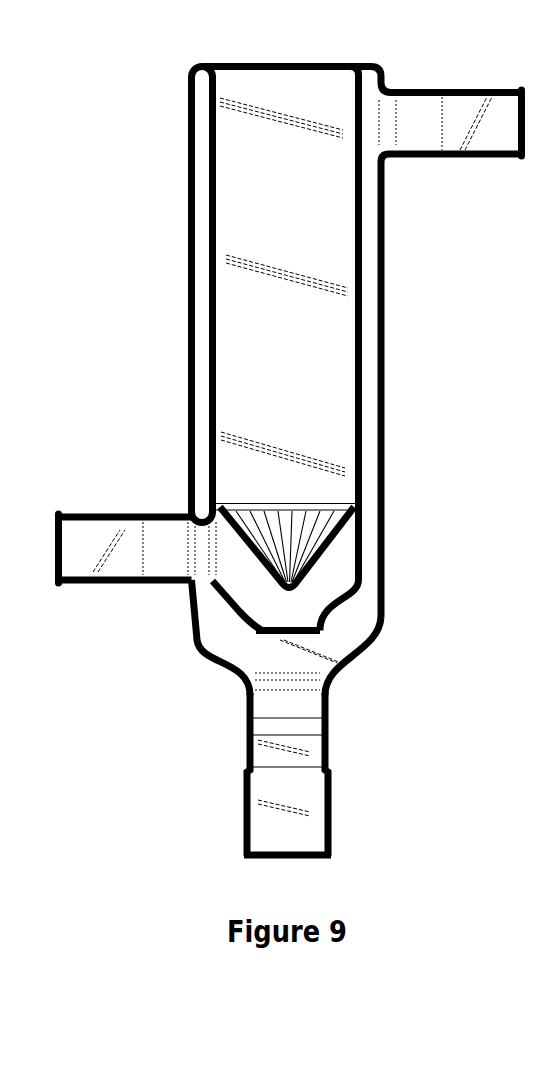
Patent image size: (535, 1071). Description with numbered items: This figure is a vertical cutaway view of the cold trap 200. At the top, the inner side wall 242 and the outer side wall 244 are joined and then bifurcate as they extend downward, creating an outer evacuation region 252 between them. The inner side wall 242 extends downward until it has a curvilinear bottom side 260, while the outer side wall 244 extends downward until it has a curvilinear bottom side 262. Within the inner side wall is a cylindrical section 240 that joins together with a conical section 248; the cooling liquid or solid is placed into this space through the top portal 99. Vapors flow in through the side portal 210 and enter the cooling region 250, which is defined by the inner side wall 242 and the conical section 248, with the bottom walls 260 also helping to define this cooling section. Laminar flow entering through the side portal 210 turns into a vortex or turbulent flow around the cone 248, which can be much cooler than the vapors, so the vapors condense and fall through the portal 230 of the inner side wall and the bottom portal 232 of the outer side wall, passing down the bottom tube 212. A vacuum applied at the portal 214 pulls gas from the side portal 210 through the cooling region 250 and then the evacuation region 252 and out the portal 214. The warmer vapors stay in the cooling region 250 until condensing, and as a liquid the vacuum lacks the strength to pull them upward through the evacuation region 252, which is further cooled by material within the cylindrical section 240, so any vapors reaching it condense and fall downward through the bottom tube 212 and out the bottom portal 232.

The cold trap 200 is at (155, 95).
The top portal 99 is at (282, 68).
The portal 214 is at (467, 142).
The cylindrical section 240 is at (345, 257).
The outer side wall 244 is at (380, 310).
The inner side wall 242 is at (365, 390).
The evacuation region 252 is at (205, 392).
The conical section 248 is at (318, 525).
The cooling region 250 is at (343, 578).
The portal 230 is at (300, 632).
The curvilinear bottom side 260 is at (232, 602).
The curvilinear bottom side 262 is at (213, 658).
The bottom tube 212 is at (310, 800).
The bottom portal 232 is at (298, 847).
The side portal 210 is at (80, 530).